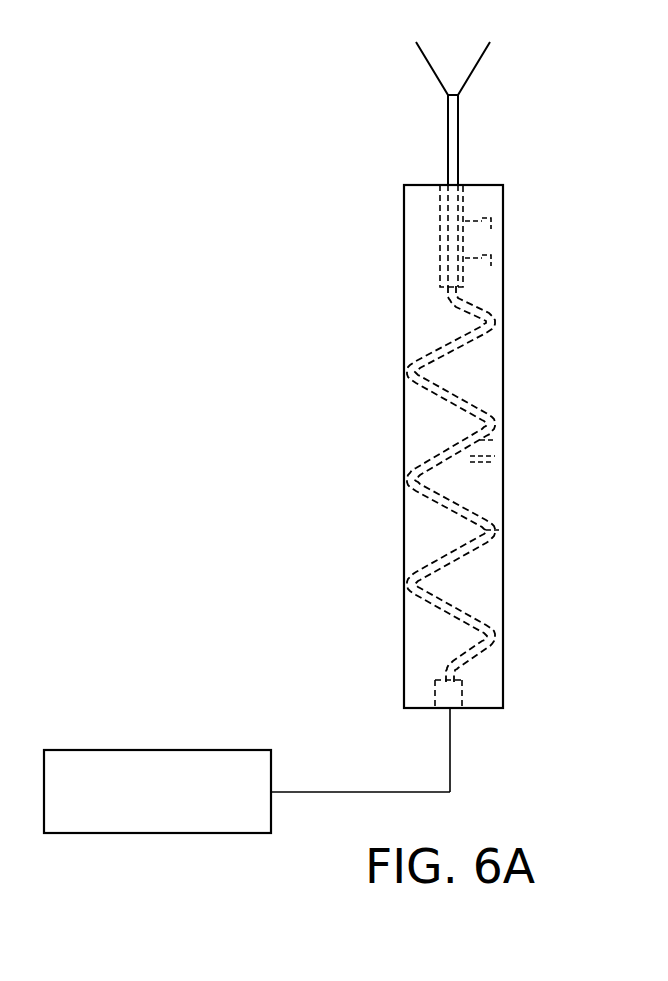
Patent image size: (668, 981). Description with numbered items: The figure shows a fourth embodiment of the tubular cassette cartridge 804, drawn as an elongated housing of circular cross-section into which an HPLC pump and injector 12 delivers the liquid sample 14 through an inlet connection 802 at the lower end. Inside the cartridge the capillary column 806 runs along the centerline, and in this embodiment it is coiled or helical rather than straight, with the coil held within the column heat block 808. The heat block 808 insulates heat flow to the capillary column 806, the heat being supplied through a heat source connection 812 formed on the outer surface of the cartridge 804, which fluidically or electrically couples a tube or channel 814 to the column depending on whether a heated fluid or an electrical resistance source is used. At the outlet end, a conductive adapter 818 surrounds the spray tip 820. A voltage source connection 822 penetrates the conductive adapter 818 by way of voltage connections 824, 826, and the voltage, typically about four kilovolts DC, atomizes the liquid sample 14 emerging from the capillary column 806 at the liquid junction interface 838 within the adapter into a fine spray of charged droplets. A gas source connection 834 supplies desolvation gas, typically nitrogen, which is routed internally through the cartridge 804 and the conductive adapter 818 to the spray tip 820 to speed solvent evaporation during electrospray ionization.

The HPLC pump and injector 12 is at (166, 833).
The liquid sample 14 is at (346, 792).
The inlet connection 802 is at (451, 716).
The tubular cassette cartridge 804 is at (403, 422).
The capillary column 806 is at (470, 620).
The column heat block 808 is at (496, 533).
The heat source connection 812 is at (500, 459).
The tube or channel 814 is at (486, 441).
The conductive adapter 818 is at (440, 226).
The spray tip 820 is at (459, 98).
The voltage source connection 822 is at (491, 258).
The voltage connection 824 is at (470, 276).
The voltage connection 826 is at (470, 276).
The gas source connection 834 is at (491, 221).
The liquid junction interface 838 is at (440, 269).